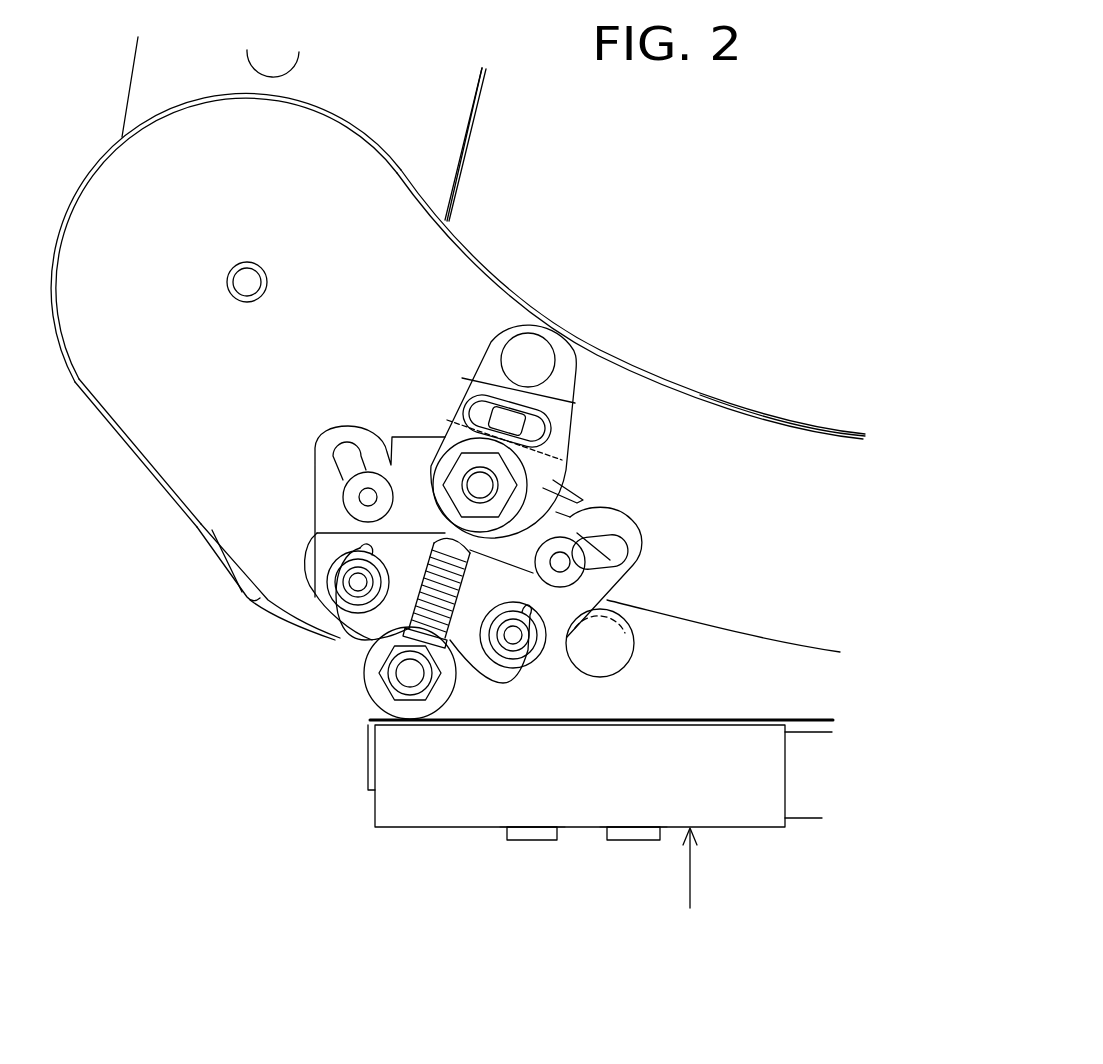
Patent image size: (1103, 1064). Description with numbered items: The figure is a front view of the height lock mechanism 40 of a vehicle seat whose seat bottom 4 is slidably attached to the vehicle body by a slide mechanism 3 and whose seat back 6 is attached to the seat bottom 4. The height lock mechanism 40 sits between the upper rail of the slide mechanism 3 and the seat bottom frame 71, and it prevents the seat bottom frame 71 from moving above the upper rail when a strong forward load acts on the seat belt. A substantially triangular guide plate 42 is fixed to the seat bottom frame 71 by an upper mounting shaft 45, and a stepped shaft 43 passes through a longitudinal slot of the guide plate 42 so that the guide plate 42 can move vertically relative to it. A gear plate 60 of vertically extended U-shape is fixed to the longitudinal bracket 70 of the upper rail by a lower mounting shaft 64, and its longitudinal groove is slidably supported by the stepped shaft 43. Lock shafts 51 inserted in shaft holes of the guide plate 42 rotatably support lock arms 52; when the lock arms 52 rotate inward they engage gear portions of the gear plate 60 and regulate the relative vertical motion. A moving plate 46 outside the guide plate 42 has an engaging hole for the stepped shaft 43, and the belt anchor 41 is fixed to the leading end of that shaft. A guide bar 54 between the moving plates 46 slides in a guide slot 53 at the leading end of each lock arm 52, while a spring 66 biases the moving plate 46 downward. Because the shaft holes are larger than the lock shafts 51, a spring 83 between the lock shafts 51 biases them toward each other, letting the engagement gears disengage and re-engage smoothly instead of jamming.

The slide mechanism 3 is at (690, 882).
The seat bottom 4 is at (703, 393).
The seat back 6 is at (477, 117).
The height lock mechanism 40 is at (578, 382).
The belt anchor 41 is at (557, 413).
The guide plate 42 is at (504, 318).
The stepped shaft 43 is at (488, 484).
The upper mounting shaft 45 is at (530, 353).
The moving plate 46 is at (557, 512).
The lock shaft 51 is at (350, 586).
The lock arm 52 is at (320, 440).
The guide slot 53 is at (348, 458).
The guide bar 54 is at (367, 497).
The gear plate 60 is at (372, 660).
The lower mounting shaft 64 is at (412, 678).
The spring 66 is at (345, 640).
The longitudinal bracket 70 is at (618, 692).
The seat bottom frame 71 is at (797, 417).
The spring 83 is at (500, 690).